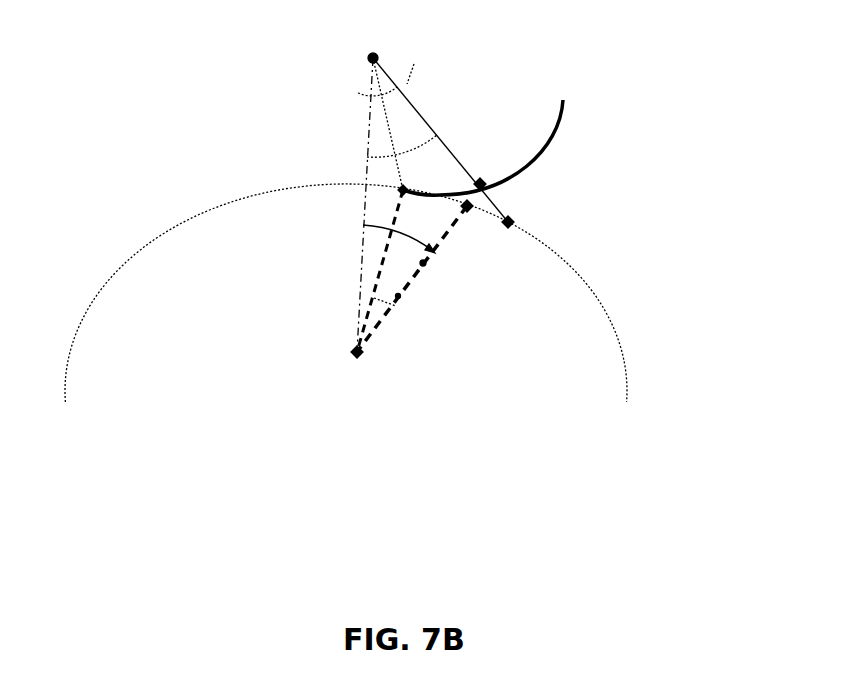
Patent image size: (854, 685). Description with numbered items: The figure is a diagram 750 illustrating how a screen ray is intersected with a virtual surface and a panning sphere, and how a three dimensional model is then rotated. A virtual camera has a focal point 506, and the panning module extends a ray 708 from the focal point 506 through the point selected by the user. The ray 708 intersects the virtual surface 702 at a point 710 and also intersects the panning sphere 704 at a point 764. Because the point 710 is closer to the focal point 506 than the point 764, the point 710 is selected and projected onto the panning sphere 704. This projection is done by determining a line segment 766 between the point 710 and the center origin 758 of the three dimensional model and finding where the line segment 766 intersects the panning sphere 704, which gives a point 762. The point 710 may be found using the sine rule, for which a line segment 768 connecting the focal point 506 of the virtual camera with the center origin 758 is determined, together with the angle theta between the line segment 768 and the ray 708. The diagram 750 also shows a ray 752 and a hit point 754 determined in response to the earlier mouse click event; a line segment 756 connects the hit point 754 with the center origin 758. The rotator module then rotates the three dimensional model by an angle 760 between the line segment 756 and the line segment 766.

The diagram 750 is at (742, 56).
The focal point 506 is at (377, 56).
The virtual surface 702 is at (551, 131).
The panning sphere 704 is at (618, 333).
The ray 708 is at (423, 117).
The point 710 is at (485, 186).
The ray 752 is at (391, 138).
The hit point 754 is at (401, 191).
The line segment 756 is at (381, 267).
The center origin 758 is at (356, 352).
The angle 760 is at (399, 297).
The point 762 is at (472, 207).
The point 764 is at (512, 224).
The line segment 766 is at (426, 264).
The line segment 768 is at (368, 167).